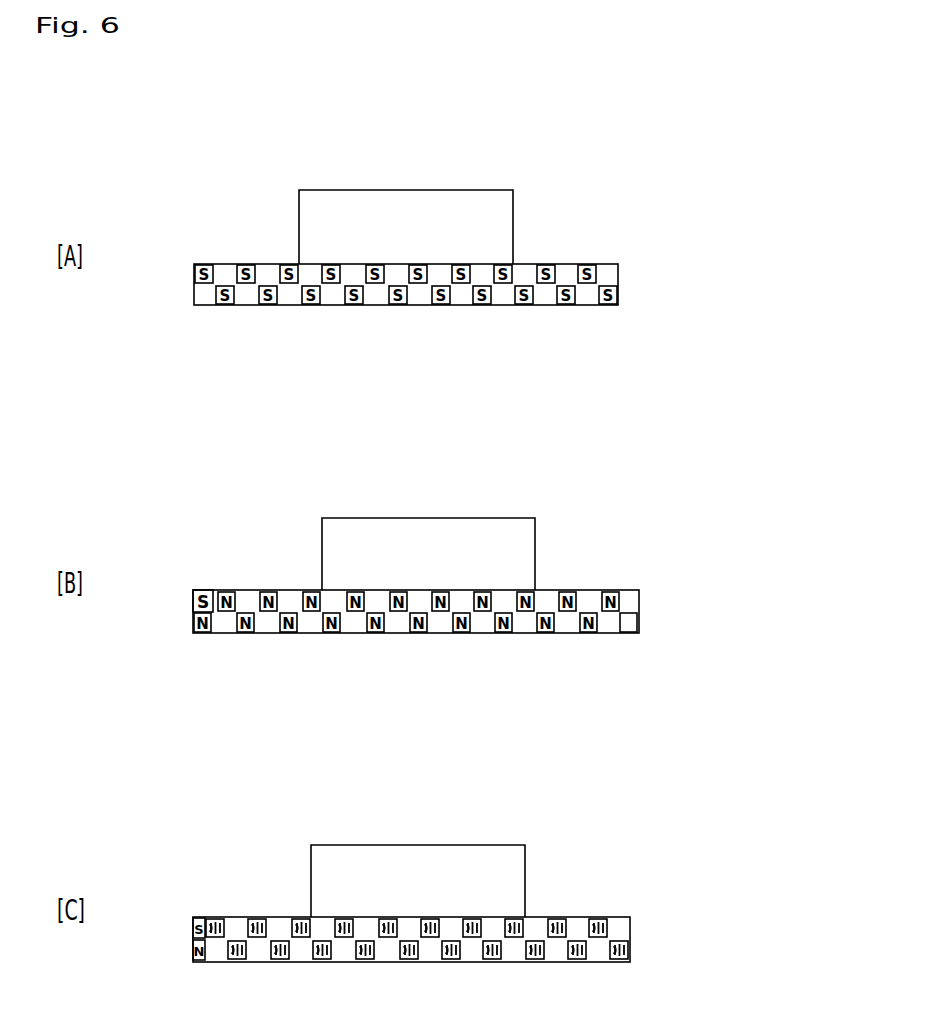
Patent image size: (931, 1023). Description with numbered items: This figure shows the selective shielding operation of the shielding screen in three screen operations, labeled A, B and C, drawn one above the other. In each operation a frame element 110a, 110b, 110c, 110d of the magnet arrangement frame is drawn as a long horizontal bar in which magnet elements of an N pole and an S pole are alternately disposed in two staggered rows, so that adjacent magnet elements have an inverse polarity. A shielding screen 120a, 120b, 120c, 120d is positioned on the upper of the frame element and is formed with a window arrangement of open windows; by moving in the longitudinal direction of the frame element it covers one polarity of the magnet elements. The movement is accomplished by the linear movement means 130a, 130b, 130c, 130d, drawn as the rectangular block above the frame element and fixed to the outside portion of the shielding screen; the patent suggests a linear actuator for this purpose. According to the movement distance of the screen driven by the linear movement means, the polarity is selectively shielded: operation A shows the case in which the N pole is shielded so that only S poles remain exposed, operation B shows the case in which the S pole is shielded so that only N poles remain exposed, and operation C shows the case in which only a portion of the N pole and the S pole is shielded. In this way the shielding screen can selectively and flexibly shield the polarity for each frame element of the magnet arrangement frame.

The frame element 110a is at (509, 245).
The frame element 110b is at (509, 245).
The frame element 110c is at (509, 245).
The frame element 110d is at (583, 265).
The shielding screen 120a is at (337, 330).
The shielding screen 120b is at (337, 330).
The shielding screen 120c is at (337, 330).
The shielding screen 120d is at (203, 298).
The linear movement means 130a is at (500, 185).
The linear movement means 130b is at (500, 185).
The linear movement means 130c is at (500, 185).
The linear movement means 130d is at (427, 208).